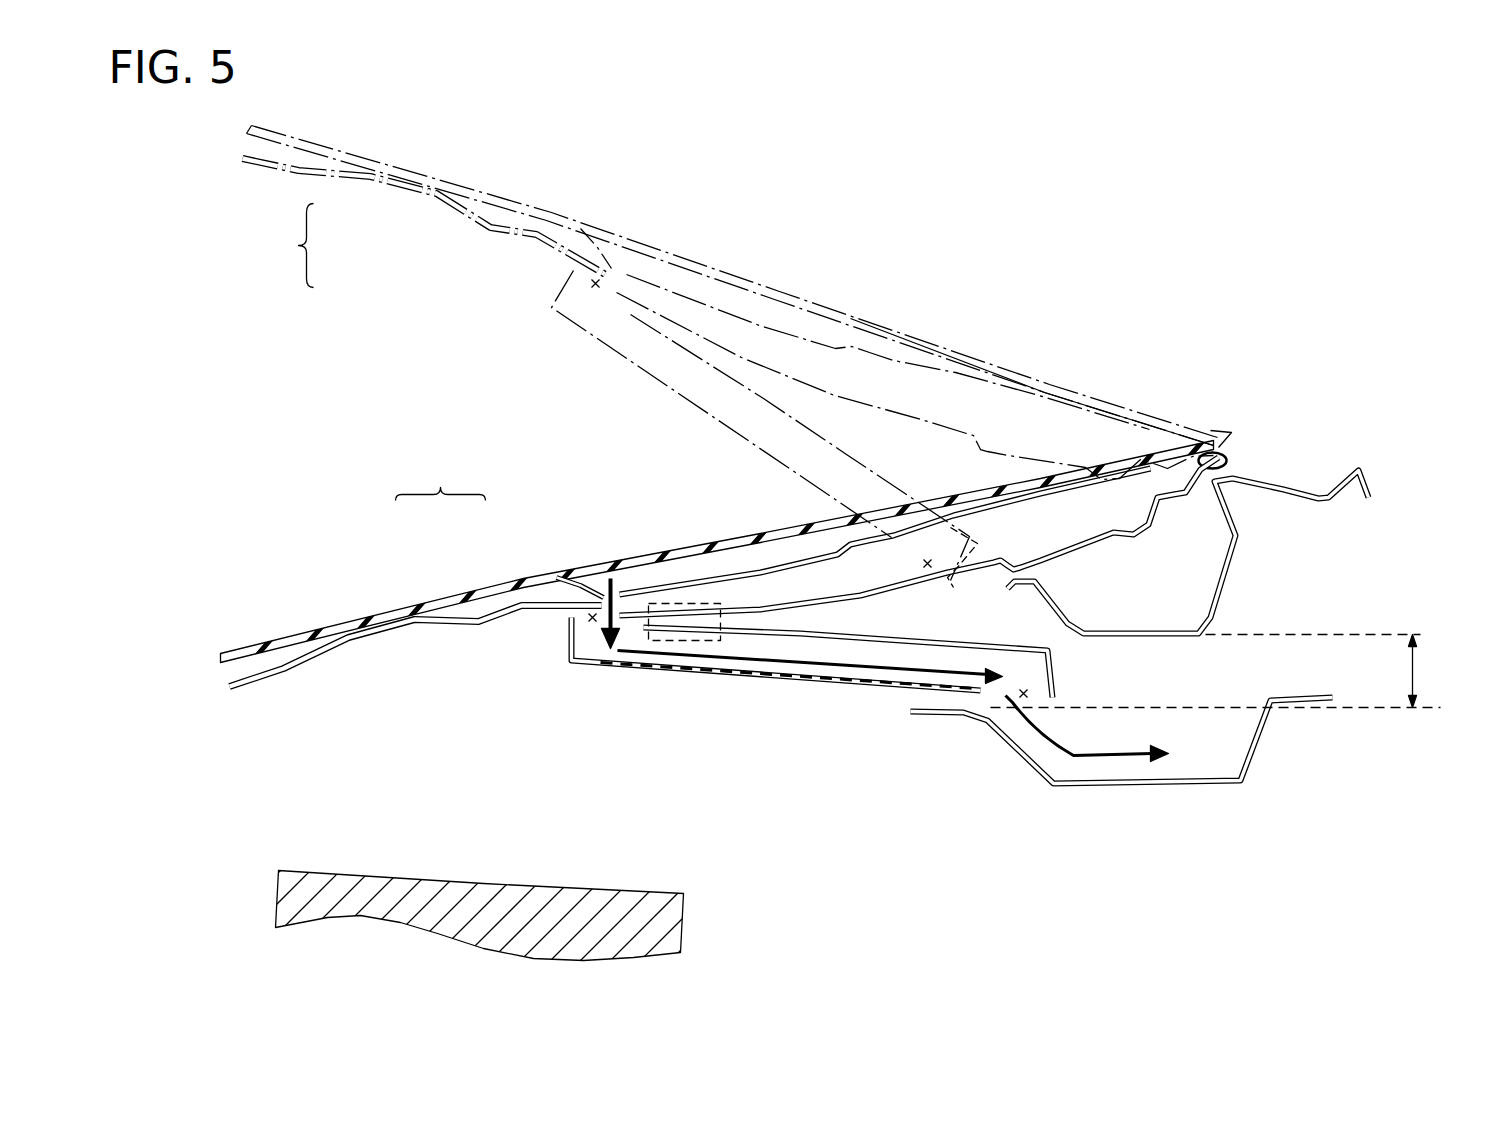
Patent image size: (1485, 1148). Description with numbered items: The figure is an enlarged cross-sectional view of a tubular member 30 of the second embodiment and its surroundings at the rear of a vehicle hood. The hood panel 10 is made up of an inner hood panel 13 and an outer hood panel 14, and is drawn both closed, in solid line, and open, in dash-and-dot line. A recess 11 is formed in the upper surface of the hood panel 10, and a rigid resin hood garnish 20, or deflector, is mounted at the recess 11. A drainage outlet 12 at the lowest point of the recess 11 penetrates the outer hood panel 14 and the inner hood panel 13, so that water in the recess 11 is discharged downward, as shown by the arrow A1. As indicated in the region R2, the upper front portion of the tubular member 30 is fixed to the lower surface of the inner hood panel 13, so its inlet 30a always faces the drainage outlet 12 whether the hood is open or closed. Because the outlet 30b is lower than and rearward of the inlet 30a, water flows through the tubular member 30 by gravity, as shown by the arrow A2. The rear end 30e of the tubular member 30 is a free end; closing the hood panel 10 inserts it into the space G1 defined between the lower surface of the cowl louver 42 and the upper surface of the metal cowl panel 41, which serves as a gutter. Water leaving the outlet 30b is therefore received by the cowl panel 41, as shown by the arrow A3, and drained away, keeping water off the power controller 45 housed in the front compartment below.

The hood panel 10 is at (373, 352).
The recess 11 is at (693, 297).
The drainage outlet 12 is at (585, 312).
The inner hood panel 13 is at (445, 202).
The outer hood panel 14 is at (493, 232).
The hood garnish 20 is at (1095, 388).
The tubular member 30 is at (643, 373).
The inlet 30a is at (588, 284).
The outlet 30b is at (927, 560).
The rear end 30e is at (1003, 535).
The cowl panel 41 is at (1193, 784).
The cowl louver 42 is at (1233, 553).
The power controller 45 is at (343, 883).
The arrow A1 is at (598, 628).
The arrow A2 is at (807, 660).
The arrow A3 is at (1107, 757).
The region R2 is at (690, 642).
The space G1 is at (1227, 671).